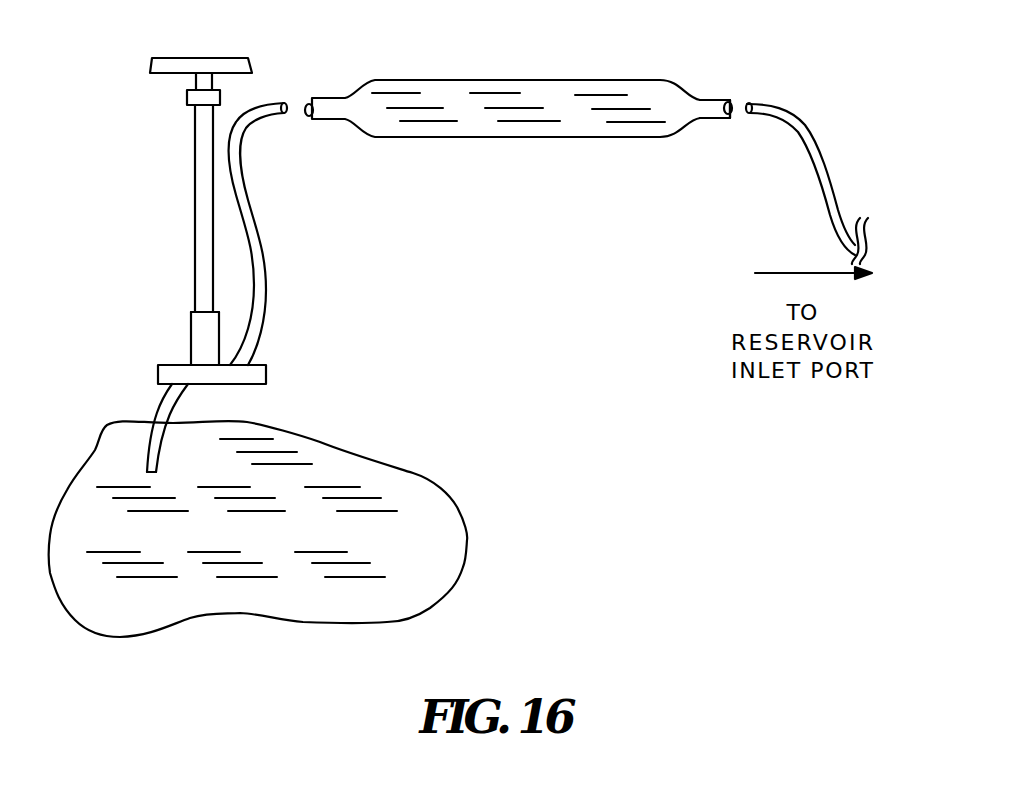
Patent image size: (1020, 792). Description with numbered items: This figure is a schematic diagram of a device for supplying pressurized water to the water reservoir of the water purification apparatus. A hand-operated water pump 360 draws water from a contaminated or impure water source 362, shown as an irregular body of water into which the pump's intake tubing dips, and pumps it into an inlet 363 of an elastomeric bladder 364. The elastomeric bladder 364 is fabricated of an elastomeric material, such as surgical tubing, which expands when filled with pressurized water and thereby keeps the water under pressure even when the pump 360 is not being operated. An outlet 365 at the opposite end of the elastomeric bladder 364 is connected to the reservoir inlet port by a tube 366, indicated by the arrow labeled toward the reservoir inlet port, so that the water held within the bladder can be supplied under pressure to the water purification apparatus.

The water pump 360 is at (205, 195).
The contaminated or impure water source 362 is at (405, 488).
The inlet of elastomeric bladder 363 is at (320, 99).
The elastomeric bladder 364 is at (508, 87).
The outlet of elastomeric bladder 365 is at (683, 109).
The tube 366 is at (815, 160).